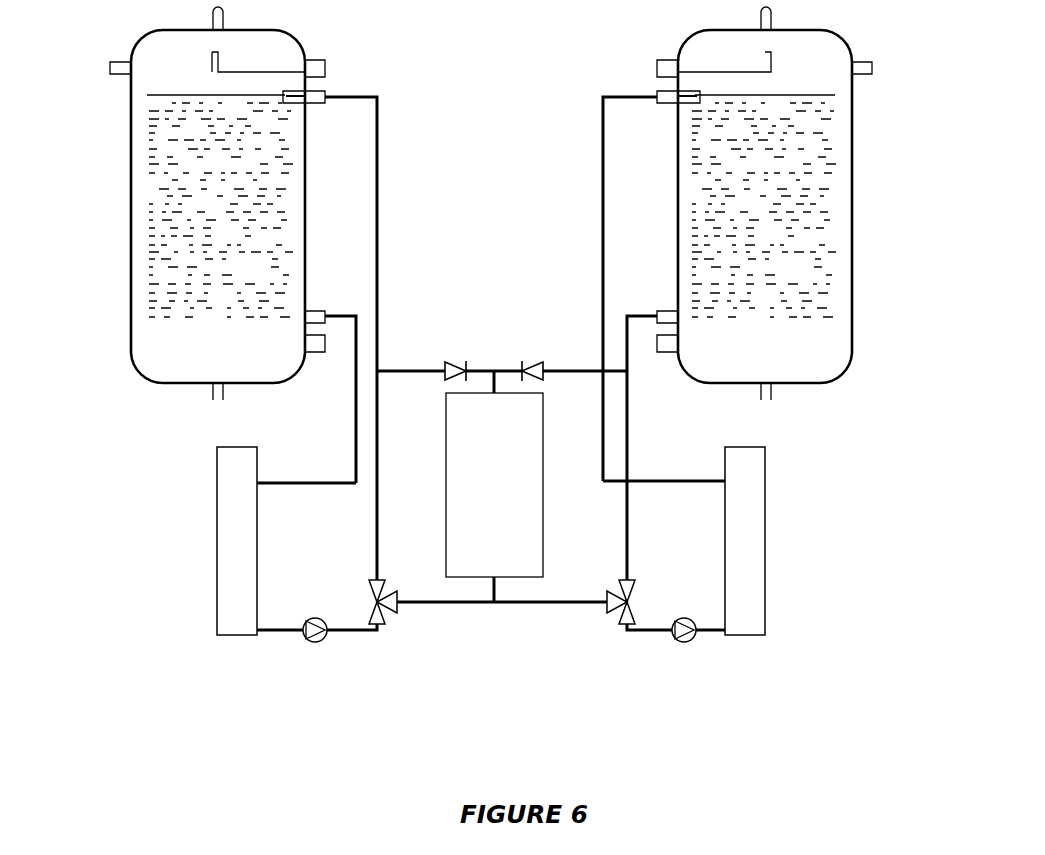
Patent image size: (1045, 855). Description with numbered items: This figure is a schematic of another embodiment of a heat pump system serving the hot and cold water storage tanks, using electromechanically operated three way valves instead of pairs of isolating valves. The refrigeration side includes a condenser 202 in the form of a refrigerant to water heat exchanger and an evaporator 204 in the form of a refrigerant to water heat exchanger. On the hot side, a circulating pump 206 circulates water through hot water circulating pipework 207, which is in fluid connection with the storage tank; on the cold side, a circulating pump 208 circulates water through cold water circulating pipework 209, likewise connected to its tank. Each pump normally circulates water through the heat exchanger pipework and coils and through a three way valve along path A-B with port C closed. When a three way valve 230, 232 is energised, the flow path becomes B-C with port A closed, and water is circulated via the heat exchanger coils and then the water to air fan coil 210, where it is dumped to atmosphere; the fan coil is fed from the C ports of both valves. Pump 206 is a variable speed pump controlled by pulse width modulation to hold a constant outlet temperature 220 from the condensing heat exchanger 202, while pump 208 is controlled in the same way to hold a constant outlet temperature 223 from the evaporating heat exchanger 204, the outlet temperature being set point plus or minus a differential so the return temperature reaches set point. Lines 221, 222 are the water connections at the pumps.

The condenser 202 is at (767, 538).
The evaporator 204 is at (217, 518).
The circulating pump 206 is at (675, 636).
The hot water circulating pipework 207 is at (596, 168).
The circulating pump 208 is at (316, 626).
The cold water circulating pipework 209 is at (355, 413).
The water to air fan coil 210 is at (478, 469).
The outlet temperature 220 is at (724, 484).
The supply line 221 is at (258, 634).
The supply line 222 is at (723, 634).
The outlet temperature 223 is at (256, 484).
The three-way valve 230 is at (625, 605).
The three-way valve 232 is at (379, 605).